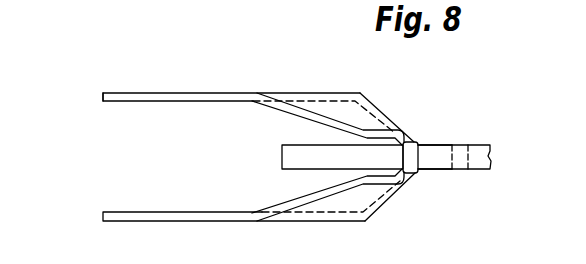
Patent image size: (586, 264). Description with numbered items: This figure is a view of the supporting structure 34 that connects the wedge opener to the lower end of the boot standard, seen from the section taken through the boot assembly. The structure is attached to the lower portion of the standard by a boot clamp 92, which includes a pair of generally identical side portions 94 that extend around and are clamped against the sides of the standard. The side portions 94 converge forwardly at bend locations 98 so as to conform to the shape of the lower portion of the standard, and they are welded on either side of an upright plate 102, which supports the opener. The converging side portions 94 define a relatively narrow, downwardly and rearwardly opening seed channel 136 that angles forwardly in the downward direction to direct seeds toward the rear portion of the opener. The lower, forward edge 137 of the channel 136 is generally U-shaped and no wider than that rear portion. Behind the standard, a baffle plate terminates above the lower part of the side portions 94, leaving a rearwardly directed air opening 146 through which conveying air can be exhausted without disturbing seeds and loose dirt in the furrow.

The supporting structure 34 is at (461, 89).
The boot clamp 92 is at (103, 95).
The side portions 94 is at (210, 93).
The bend locations 98 is at (358, 93).
The upright plate 102 is at (427, 145).
The seed channel 136 is at (286, 181).
The lower forward edge 137 is at (408, 174).
The air opening 146 is at (130, 158).